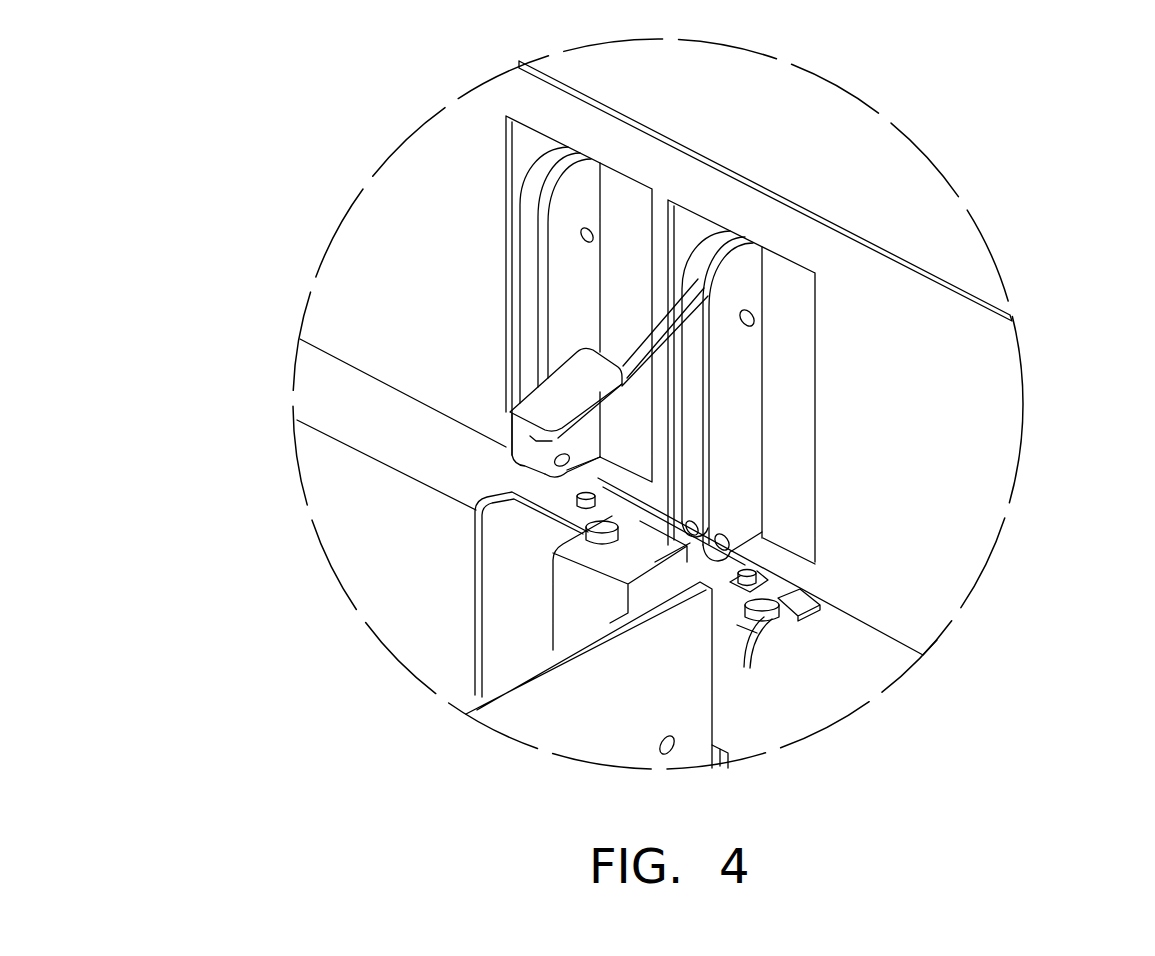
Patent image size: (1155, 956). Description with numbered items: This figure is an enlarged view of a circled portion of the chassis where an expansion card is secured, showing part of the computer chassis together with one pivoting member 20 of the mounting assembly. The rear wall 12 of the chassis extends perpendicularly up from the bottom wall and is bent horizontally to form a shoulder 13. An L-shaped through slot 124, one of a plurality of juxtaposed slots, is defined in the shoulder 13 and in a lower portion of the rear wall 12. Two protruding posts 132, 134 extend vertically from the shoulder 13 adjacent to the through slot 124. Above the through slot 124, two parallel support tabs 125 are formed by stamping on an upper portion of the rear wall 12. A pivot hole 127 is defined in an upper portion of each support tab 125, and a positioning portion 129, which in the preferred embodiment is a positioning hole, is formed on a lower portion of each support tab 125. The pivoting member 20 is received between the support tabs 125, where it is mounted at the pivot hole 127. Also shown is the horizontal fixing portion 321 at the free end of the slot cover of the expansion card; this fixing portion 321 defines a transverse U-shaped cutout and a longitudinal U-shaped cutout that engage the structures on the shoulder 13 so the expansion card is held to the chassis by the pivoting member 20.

The rear wall 12 is at (893, 280).
The shoulder 13 is at (333, 392).
The pivoting member 20 is at (557, 400).
The L-shaped through slot 124 is at (518, 578).
The support tab 125 is at (728, 250).
The pivot hole 127 is at (749, 314).
The positioning portion 129 is at (745, 538).
The protruding post 132 is at (770, 602).
The protruding post 134 is at (752, 578).
The fixing portion 321 is at (713, 625).